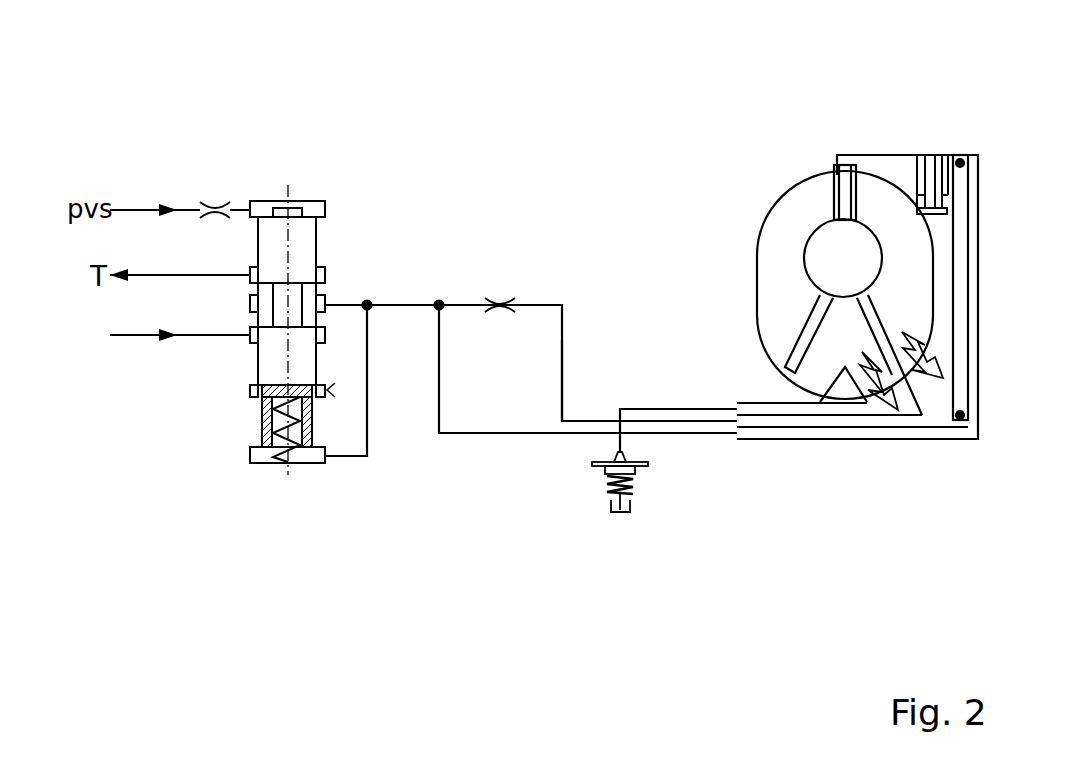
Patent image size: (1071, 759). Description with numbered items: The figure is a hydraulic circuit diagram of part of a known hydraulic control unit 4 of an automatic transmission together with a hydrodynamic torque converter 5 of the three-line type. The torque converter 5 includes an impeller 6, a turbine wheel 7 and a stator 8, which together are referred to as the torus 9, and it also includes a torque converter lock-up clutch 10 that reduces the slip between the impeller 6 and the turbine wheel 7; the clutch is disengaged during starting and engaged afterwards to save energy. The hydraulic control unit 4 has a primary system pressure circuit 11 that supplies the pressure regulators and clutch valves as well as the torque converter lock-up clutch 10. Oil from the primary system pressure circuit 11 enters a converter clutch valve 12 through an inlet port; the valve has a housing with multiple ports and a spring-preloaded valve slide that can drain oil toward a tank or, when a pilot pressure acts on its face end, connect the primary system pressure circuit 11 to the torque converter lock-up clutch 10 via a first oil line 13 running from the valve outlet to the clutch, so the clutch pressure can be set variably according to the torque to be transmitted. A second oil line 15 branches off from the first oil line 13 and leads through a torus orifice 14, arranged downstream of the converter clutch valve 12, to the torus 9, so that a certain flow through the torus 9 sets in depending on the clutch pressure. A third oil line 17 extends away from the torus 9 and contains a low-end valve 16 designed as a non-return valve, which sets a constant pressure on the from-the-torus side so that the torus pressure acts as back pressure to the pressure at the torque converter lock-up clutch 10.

The hydraulic control unit 4 is at (533, 146).
The hydrodynamic torque converter 5 is at (820, 143).
The impeller 6 is at (777, 300).
The turbine wheel 7 is at (882, 208).
The stator 8 is at (823, 357).
The torus 9 is at (782, 186).
The torque converter lock-up clutch 10 is at (936, 146).
The primary system pressure circuit 11 is at (137, 335).
The converter clutch valve 12 is at (273, 471).
The first oil line 13 is at (467, 433).
The torus orifice 14 is at (495, 292).
The second oil line 15 is at (562, 340).
The low-end valve 16 is at (630, 522).
The third oil line 17 is at (652, 403).